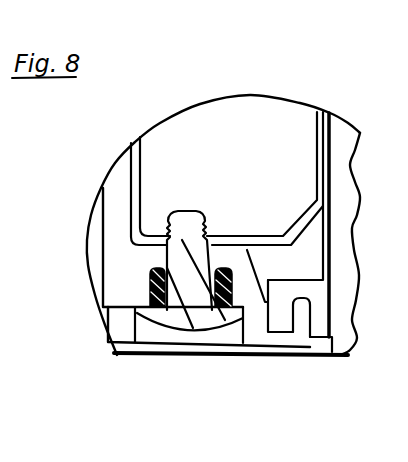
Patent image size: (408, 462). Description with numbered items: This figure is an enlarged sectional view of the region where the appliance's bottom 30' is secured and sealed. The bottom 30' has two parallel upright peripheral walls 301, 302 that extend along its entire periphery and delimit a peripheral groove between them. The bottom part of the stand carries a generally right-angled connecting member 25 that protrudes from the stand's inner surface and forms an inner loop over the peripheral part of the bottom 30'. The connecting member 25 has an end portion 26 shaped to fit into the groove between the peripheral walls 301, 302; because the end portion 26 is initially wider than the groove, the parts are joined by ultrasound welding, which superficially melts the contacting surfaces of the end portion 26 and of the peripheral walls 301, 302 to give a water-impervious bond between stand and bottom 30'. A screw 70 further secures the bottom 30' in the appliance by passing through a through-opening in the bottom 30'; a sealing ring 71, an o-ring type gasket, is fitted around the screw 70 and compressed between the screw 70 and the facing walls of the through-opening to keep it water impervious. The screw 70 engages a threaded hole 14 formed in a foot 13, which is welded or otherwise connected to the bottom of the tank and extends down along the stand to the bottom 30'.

The foot 13 is at (300, 223).
The threaded hole 14 is at (213, 227).
The connecting member 25 is at (303, 287).
The end portion 26 is at (281, 302).
The bottom 30' is at (190, 225).
The screw 70 is at (168, 320).
The sealing ring 71 is at (147, 279).
The peripheral wall 301 is at (298, 333).
The peripheral wall 302 is at (258, 325).